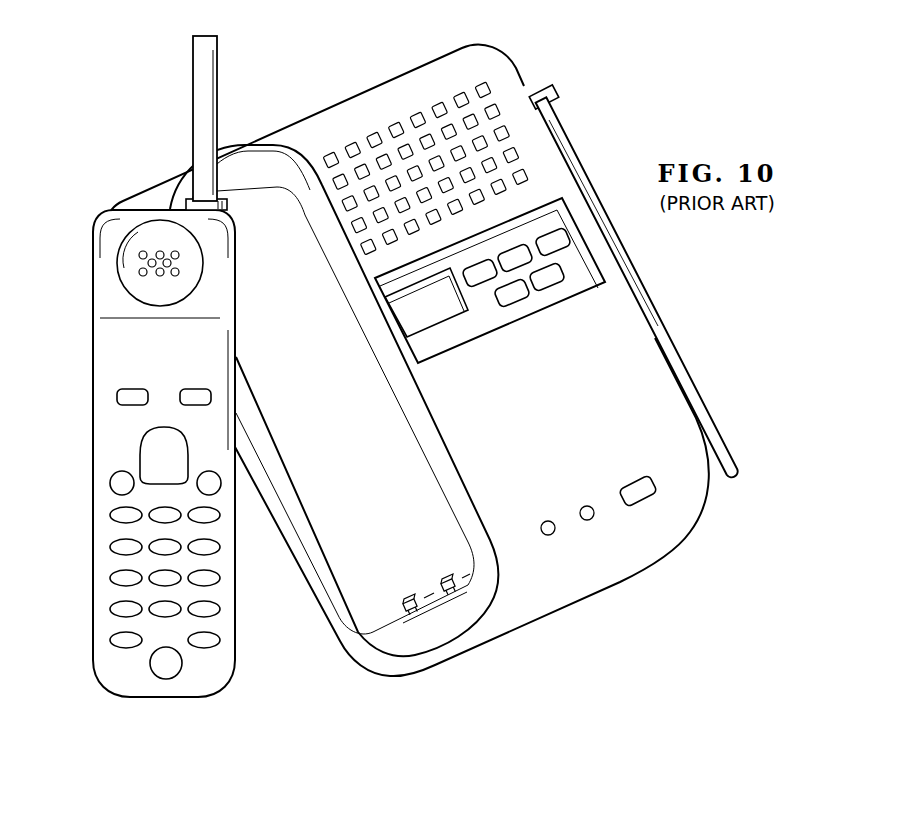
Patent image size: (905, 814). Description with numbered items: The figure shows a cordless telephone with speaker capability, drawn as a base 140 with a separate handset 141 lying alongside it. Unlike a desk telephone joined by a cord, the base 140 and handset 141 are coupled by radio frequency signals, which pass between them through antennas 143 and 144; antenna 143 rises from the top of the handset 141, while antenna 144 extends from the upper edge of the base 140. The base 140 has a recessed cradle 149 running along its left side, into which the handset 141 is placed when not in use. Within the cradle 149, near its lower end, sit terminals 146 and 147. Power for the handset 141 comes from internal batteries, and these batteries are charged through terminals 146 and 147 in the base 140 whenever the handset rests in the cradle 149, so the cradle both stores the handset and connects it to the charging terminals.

The base 140 is at (407, 90).
The handset 141 is at (119, 207).
The antenna 143 is at (202, 106).
The antenna 144 is at (672, 348).
The terminal 146 is at (403, 603).
The terminal 147 is at (445, 583).
The cradle 149 is at (248, 217).